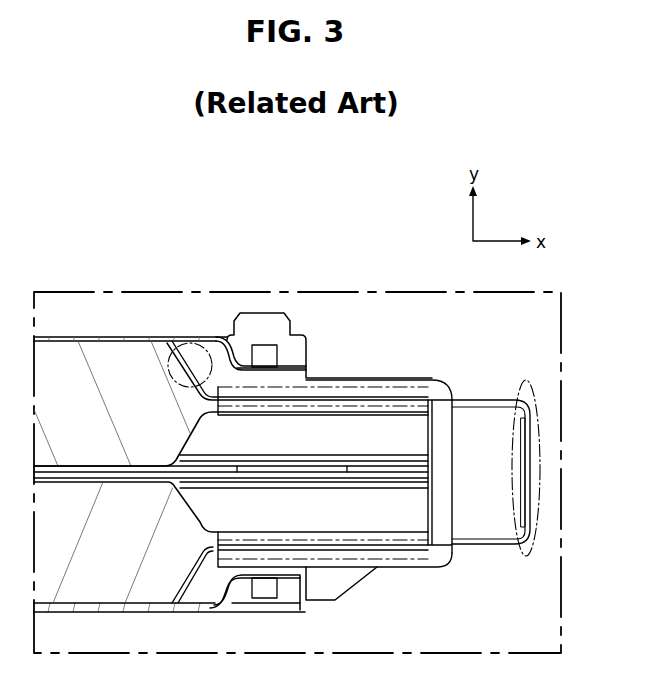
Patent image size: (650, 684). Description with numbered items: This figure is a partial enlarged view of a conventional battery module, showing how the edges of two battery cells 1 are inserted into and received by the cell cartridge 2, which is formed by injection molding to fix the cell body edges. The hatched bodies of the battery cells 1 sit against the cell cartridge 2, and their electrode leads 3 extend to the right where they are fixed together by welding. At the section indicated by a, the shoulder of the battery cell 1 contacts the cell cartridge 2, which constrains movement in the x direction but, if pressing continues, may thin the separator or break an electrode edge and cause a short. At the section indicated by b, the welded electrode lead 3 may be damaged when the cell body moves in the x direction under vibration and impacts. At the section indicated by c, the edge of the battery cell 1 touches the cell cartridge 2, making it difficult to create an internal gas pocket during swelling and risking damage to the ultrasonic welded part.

The battery cell 1 is at (57, 415).
The cell cartridge 2 is at (437, 382).
The electrode lead 3 is at (530, 458).
The shoulder contact section a is at (204, 362).
The welded lead section b is at (523, 410).
The cell edge contact section c is at (378, 383).